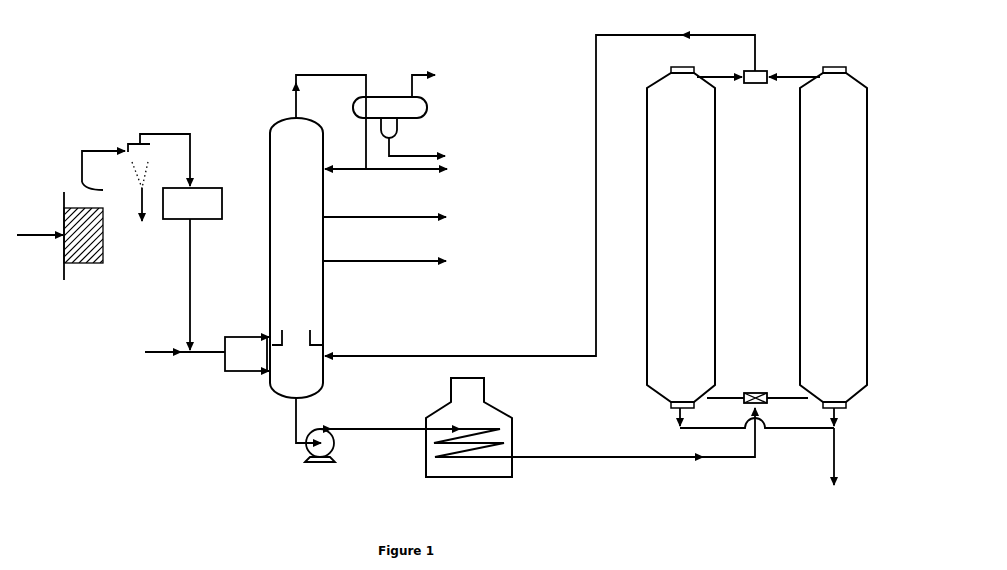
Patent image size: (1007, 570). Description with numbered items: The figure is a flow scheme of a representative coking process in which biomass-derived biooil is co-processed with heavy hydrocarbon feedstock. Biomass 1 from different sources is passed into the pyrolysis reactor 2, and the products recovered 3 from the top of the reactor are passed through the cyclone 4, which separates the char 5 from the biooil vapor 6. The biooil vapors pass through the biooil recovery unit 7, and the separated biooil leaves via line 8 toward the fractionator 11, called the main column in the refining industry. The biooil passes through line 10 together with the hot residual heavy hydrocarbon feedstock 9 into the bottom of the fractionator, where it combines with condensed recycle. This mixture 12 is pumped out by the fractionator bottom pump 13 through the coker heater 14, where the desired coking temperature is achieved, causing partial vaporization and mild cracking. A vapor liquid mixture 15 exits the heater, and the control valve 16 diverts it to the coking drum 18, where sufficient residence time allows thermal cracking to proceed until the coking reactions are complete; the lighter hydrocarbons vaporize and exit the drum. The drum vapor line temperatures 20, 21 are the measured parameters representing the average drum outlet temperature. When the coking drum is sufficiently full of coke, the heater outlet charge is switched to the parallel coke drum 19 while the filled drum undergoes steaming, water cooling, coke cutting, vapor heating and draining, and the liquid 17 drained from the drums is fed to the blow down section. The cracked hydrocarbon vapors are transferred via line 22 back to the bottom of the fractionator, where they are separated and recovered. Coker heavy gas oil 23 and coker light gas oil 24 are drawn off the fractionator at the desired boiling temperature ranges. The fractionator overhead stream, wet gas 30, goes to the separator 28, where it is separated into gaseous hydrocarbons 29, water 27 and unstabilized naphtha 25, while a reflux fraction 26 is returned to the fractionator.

The biomass 1 is at (30, 234).
The pyrolysis reactor 2 is at (64, 280).
The products recovered 3 is at (98, 151).
The cyclone 4 is at (152, 162).
The char 5 is at (135, 204).
The biooil vapor 6 is at (190, 150).
The biooil recovery unit 7 is at (222, 208).
The line 8 is at (184, 284).
The hot residual heavy hydrocarbon feedstock 9 is at (160, 352).
The line 10 is at (249, 337).
The fractionator 11 is at (270, 265).
The mixture 12 is at (296, 420).
The fractionator bottom pump 13 is at (334, 440).
The coker heater 14 is at (512, 418).
The vapor liquid mixture 15 is at (689, 457).
The control valve 16 is at (760, 392).
The liquid 17 is at (834, 458).
The coking drum 18 is at (715, 243).
The parallel coke drum 19 is at (800, 233).
The drum vapor line temperature 20 is at (720, 77).
The drum vapor line temperature 21 is at (798, 77).
The line 22 is at (596, 233).
The coker heavy gas oil 23 is at (430, 261).
The coker light gas oil 24 is at (424, 217).
The unstabilized naphtha 25 is at (430, 169).
The reflux fraction 26 is at (348, 162).
The water 27 is at (410, 156).
The separator 28 is at (427, 108).
The gaseous hydrocarbons 29 is at (426, 75).
The wet gas 30 is at (331, 114).